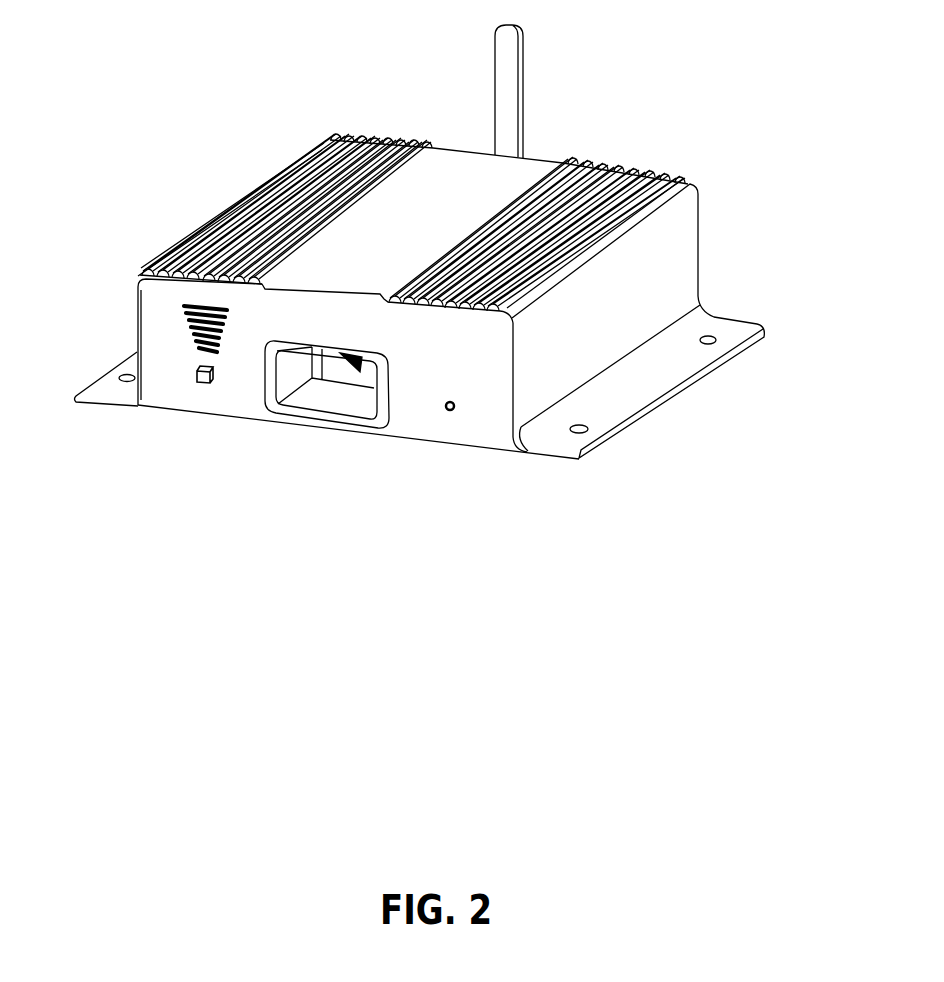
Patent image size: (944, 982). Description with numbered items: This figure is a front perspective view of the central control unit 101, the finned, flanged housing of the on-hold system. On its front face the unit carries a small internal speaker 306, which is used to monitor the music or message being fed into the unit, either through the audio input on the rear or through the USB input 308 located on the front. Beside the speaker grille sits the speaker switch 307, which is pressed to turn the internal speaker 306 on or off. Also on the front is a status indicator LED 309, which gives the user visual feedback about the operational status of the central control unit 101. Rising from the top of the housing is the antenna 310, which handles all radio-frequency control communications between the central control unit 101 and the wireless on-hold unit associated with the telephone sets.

The central control unit 101 is at (722, 160).
The internal speaker 306 is at (162, 327).
The speaker switch 307 is at (185, 373).
The USB input 308 is at (333, 397).
The status indicator LED 309 is at (433, 407).
The antenna 310 is at (483, 87).